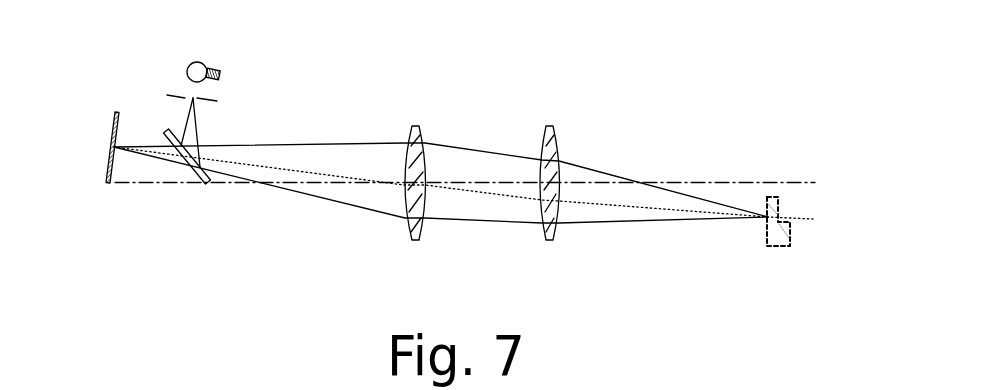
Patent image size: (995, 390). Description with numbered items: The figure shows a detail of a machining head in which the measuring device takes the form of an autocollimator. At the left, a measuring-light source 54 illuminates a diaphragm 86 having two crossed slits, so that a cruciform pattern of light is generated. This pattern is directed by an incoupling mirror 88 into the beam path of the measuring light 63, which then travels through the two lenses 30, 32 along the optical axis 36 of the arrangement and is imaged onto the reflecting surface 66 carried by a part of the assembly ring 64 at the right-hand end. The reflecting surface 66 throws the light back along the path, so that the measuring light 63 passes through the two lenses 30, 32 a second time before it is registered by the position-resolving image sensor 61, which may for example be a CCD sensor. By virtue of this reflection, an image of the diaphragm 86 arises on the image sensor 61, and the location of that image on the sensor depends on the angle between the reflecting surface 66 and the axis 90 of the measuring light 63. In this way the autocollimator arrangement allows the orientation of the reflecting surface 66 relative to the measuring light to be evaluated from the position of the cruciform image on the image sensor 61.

The lens 30 is at (408, 140).
The lens 32 is at (558, 143).
The optical axis 36 is at (792, 181).
The measuring-light source 54 is at (210, 68).
The position-resolving image sensor 61 is at (112, 127).
The measuring light 63 is at (312, 145).
The assembly ring 64 is at (782, 248).
The reflecting surface 66 is at (767, 229).
The diaphragm 86 is at (177, 96).
The incoupling mirror 88 is at (203, 182).
The axis of the measuring light 90 is at (658, 207).